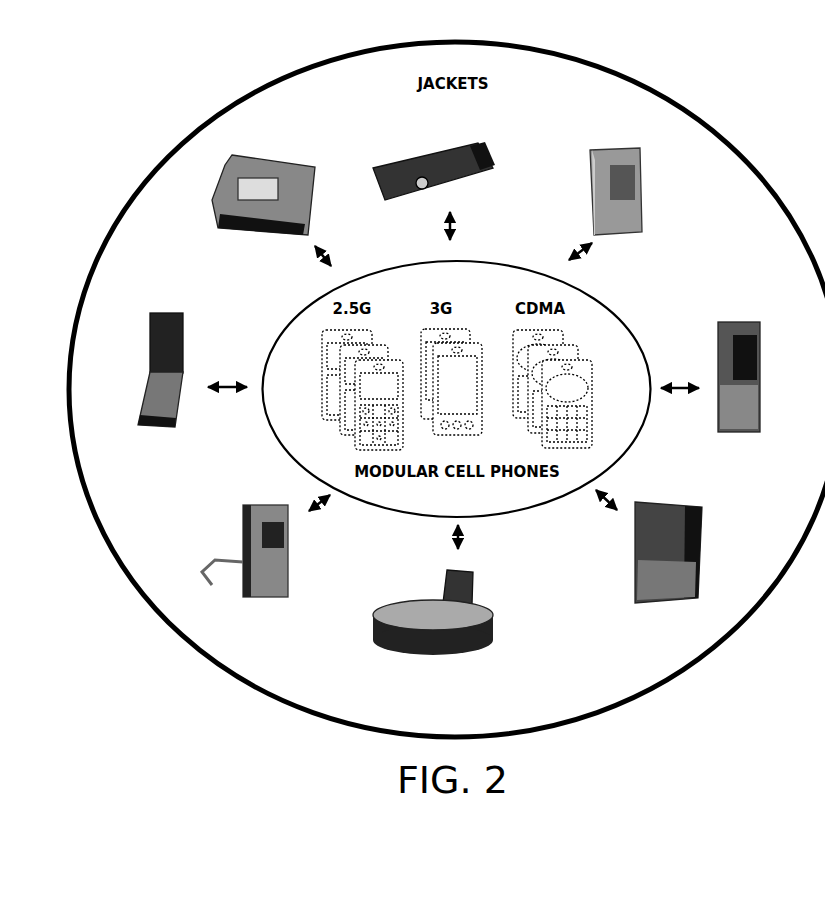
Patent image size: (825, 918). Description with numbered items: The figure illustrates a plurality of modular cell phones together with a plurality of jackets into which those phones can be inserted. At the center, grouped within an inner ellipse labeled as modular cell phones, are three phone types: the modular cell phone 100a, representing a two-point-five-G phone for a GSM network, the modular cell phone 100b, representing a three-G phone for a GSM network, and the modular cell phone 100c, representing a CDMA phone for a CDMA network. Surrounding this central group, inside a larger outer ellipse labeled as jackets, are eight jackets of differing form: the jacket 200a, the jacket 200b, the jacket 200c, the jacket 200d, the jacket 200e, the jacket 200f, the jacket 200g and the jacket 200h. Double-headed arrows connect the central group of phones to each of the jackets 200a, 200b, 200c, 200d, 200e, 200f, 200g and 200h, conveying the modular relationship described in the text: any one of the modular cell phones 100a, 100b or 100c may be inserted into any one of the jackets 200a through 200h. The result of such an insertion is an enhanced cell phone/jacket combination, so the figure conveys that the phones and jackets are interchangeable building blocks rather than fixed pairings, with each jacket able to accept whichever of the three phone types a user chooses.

The modular cell phone 100a is at (322, 405).
The modular cell phone 100b is at (419, 405).
The modular cell phone 100c is at (514, 405).
The jacket 200a is at (493, 150).
The jacket 200b is at (640, 190).
The jacket 200c is at (762, 398).
The jacket 200d is at (700, 568).
The jacket 200e is at (496, 615).
The jacket 200f is at (290, 560).
The jacket 200g is at (175, 403).
The jacket 200h is at (318, 152).